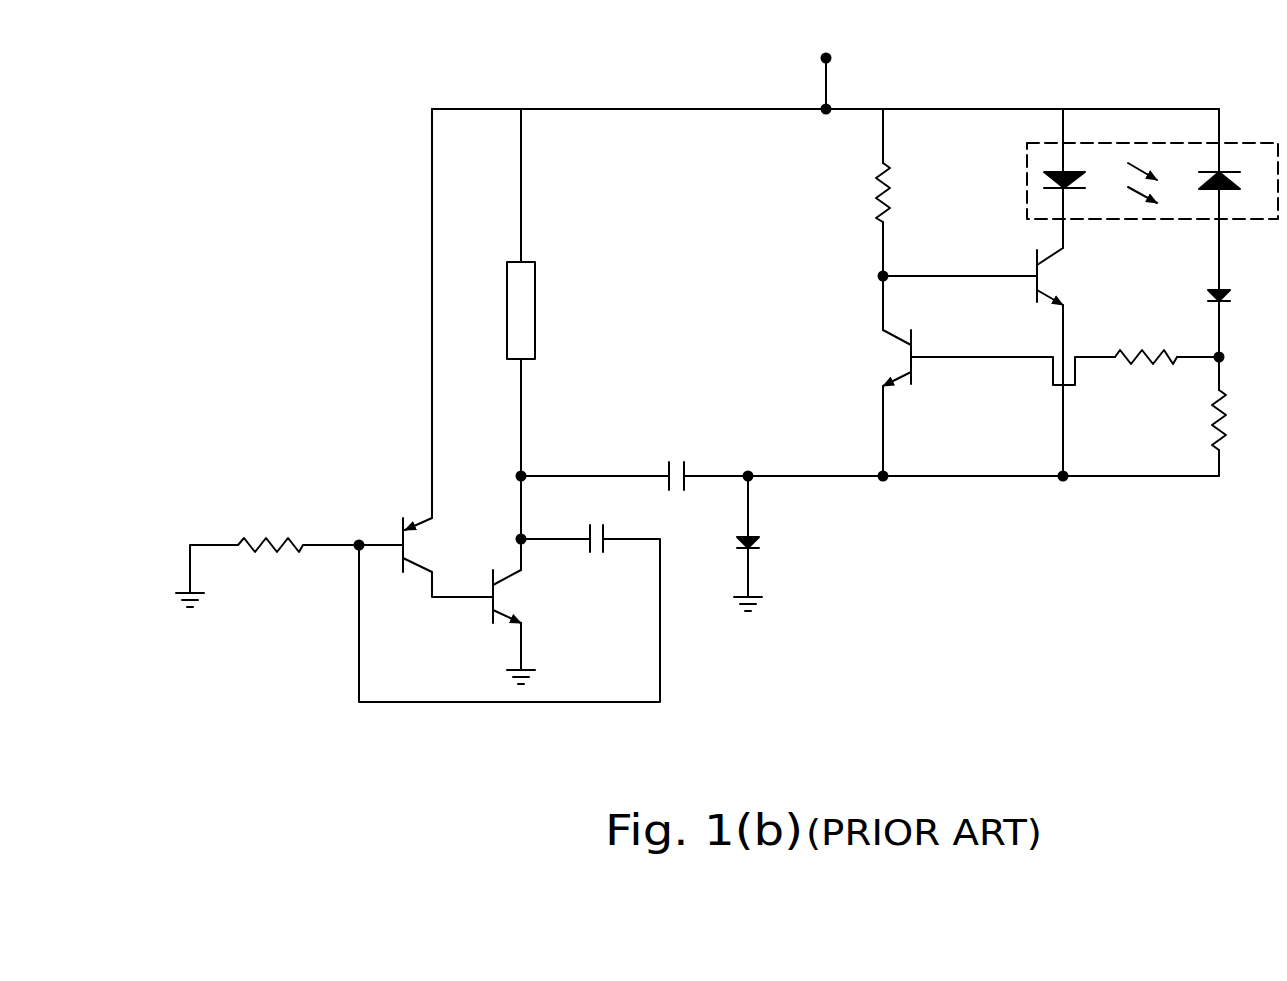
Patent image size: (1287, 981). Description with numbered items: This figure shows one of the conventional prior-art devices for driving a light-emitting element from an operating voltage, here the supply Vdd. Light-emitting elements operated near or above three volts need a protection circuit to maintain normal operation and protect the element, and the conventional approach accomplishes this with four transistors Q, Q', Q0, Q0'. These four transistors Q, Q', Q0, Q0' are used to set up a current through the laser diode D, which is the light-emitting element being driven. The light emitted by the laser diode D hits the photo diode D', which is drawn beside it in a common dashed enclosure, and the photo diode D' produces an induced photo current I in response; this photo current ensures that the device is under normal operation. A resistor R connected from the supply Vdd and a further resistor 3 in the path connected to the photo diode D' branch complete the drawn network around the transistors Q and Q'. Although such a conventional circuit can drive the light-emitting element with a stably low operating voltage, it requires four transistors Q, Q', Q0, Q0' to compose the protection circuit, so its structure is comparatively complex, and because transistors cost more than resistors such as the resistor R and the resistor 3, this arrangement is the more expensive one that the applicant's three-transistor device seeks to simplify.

The resistor 3 is at (1146, 347).
The resistor R is at (865, 192).
The transistor Q is at (890, 358).
The transistor Q' is at (1063, 276).
The transistor Q0 is at (433, 545).
The transistor Q0' is at (517, 596).
The laser diode D is at (1075, 183).
The photo diode D' is at (1233, 183).
The diode I is at (1224, 298).
The supply voltage Vdd is at (829, 70).